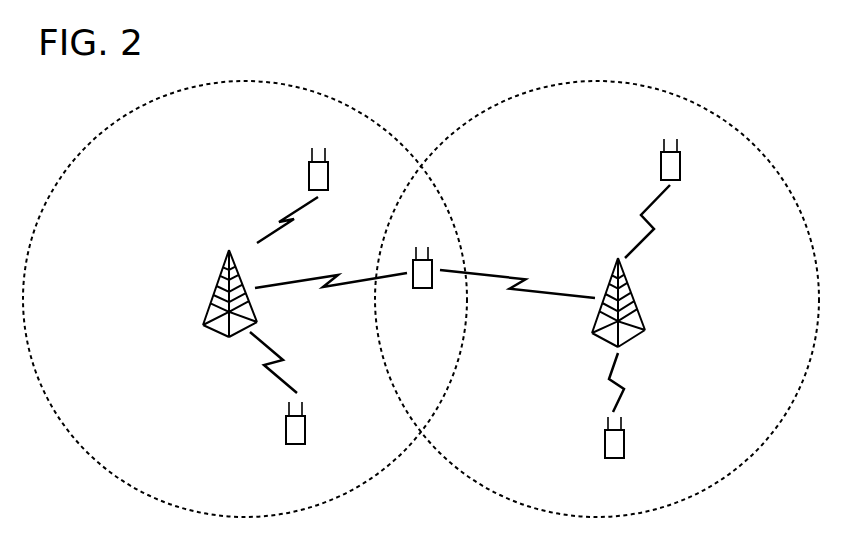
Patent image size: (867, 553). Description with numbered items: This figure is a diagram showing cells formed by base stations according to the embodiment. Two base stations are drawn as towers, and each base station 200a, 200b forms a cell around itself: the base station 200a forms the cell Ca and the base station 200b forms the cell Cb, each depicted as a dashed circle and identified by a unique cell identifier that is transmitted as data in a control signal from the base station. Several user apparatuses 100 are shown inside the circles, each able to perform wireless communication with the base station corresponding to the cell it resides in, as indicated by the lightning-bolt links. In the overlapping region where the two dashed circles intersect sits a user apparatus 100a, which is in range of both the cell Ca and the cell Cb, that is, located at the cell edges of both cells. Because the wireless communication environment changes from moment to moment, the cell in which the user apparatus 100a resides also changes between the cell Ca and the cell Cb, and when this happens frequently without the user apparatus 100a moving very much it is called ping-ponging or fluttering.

The user apparatus 100 is at (309, 173).
The user apparatus 100a is at (422, 290).
The base station 200a is at (215, 283).
The base station 200b is at (640, 296).
The cell Ca is at (386, 478).
The cell Cb is at (735, 478).